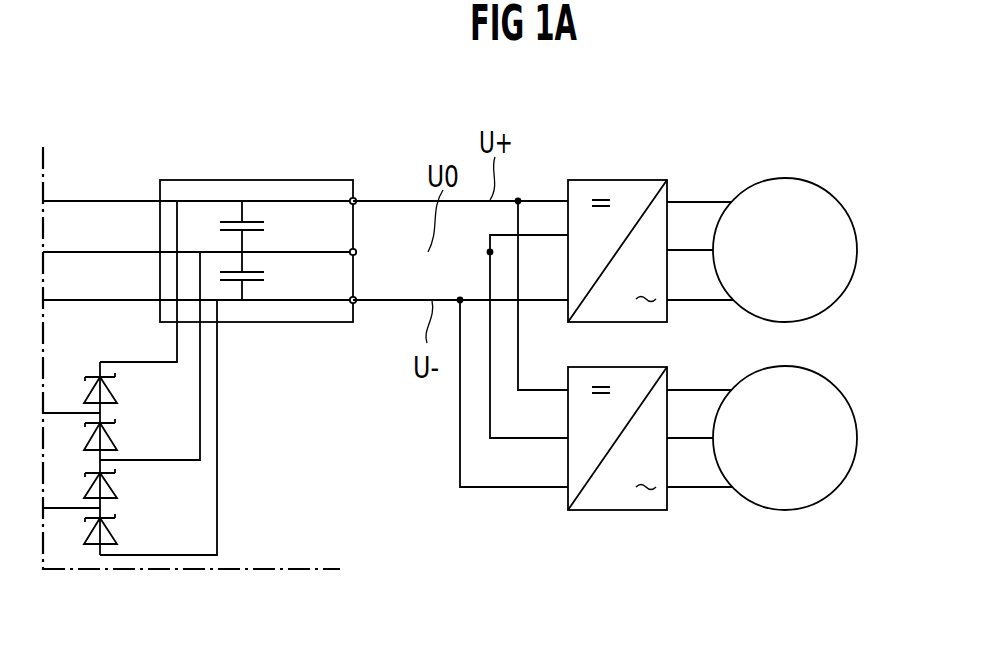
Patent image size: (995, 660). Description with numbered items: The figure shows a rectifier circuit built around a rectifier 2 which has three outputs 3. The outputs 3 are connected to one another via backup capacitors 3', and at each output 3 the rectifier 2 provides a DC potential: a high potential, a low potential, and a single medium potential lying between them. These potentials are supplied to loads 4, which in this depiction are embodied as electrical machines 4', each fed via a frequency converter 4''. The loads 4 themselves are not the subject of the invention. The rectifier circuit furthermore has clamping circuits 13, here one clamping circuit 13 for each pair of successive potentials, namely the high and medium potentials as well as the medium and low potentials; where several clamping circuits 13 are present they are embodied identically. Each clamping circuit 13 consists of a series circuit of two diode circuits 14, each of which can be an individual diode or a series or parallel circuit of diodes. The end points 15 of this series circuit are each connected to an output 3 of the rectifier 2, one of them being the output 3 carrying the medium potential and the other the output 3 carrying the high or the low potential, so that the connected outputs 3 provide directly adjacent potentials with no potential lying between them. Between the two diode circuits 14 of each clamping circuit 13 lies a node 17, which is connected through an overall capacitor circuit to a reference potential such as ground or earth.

The rectifier 2 is at (296, 180).
The output 3 is at (374, 251).
The backup capacitor 3' is at (257, 252).
The load 4 is at (712, 349).
The electrical machine 4' is at (785, 348).
The frequency converter 4'' is at (617, 359).
The clamping circuit 13 is at (185, 458).
The diode circuit 14 is at (108, 388).
The end point 15 is at (242, 201).
The node 17 is at (134, 462).